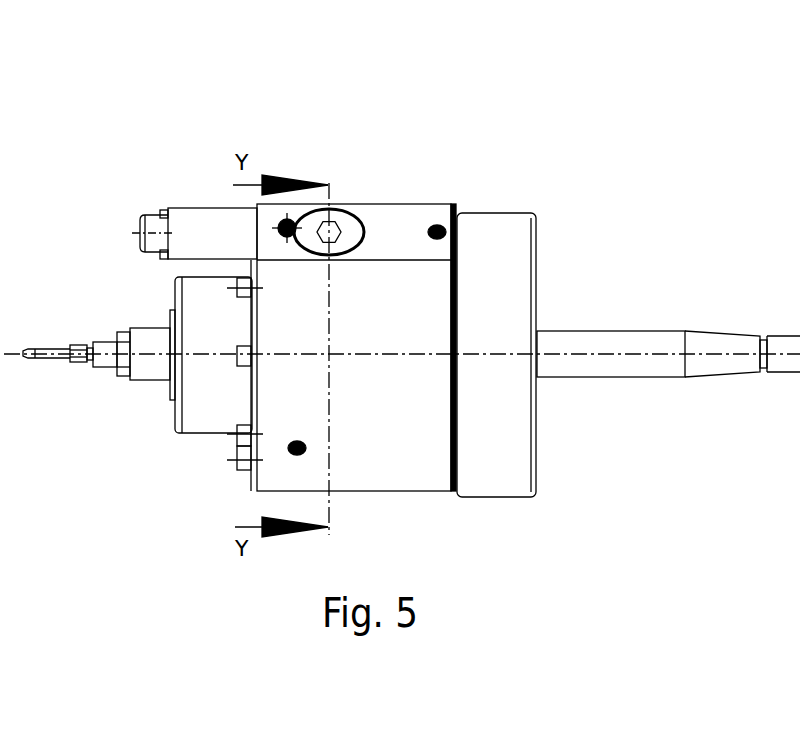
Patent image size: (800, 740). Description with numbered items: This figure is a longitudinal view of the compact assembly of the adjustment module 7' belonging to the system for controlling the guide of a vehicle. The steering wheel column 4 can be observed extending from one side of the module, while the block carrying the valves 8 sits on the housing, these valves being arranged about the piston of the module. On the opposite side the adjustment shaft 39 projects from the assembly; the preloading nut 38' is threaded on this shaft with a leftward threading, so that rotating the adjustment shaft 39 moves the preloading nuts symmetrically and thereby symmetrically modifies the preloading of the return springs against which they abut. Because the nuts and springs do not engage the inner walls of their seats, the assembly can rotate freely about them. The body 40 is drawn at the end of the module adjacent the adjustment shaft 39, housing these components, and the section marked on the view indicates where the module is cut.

The steering wheel column 4 is at (605, 343).
The adjustment module 7' is at (503, 66).
The valves 8 is at (197, 228).
The preloading nut 38' is at (105, 399).
The adjustment shaft 39 is at (47, 353).
The bearing housing 40 is at (206, 413).